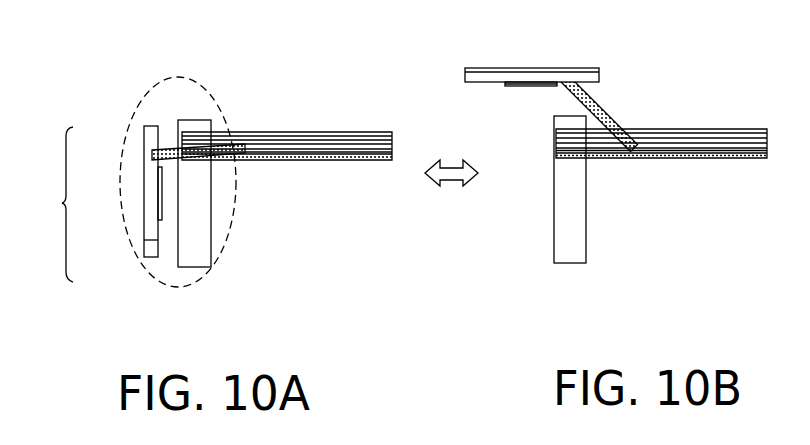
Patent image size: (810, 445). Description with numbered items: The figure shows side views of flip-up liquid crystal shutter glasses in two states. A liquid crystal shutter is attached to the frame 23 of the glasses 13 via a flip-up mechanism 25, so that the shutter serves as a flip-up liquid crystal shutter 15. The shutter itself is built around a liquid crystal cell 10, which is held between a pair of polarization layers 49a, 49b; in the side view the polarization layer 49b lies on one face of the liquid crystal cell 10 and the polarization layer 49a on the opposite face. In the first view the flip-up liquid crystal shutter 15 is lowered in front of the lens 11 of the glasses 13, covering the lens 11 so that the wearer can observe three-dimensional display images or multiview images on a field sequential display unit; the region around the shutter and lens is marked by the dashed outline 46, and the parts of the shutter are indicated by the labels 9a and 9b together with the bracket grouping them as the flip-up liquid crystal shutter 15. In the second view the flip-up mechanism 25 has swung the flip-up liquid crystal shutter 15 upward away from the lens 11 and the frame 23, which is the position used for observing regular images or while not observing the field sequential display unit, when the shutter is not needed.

In FIG. 10A, the flip-up liquid crystal shutter 15 is at (51, 204).
In FIG. 10A, the pivoting region 46 is at (182, 77).
In FIG. 10A, the lens 11 is at (205, 241).
In FIG. 10B, the lens 11 is at (575, 232).
In FIG. 10A, the glasses 13 is at (312, 122).
In FIG. 10B, the glasses 13 is at (718, 117).
In FIG. 10A, the frame 23 is at (330, 153).
In FIG. 10B, the frame 23 is at (712, 152).
In FIG. 10A, the liquid crystal cell 10 is at (148, 194).
In FIG. 10B, the liquid crystal cell 10 is at (600, 77).
In FIG. 10A, the friction member 9b is at (148, 207).
In FIG. 10B, the friction member 9b is at (531, 84).
In FIG. 10A, the plate body 9a is at (142, 243).
In FIG. 10A, the flip-up mechanism 25 is at (158, 153).
In FIG. 10B, the flip-up mechanism 25 is at (607, 105).
In FIG. 10B, the polarization layer 49b is at (540, 67).
In FIG. 10B, the polarization layer 49a is at (520, 88).